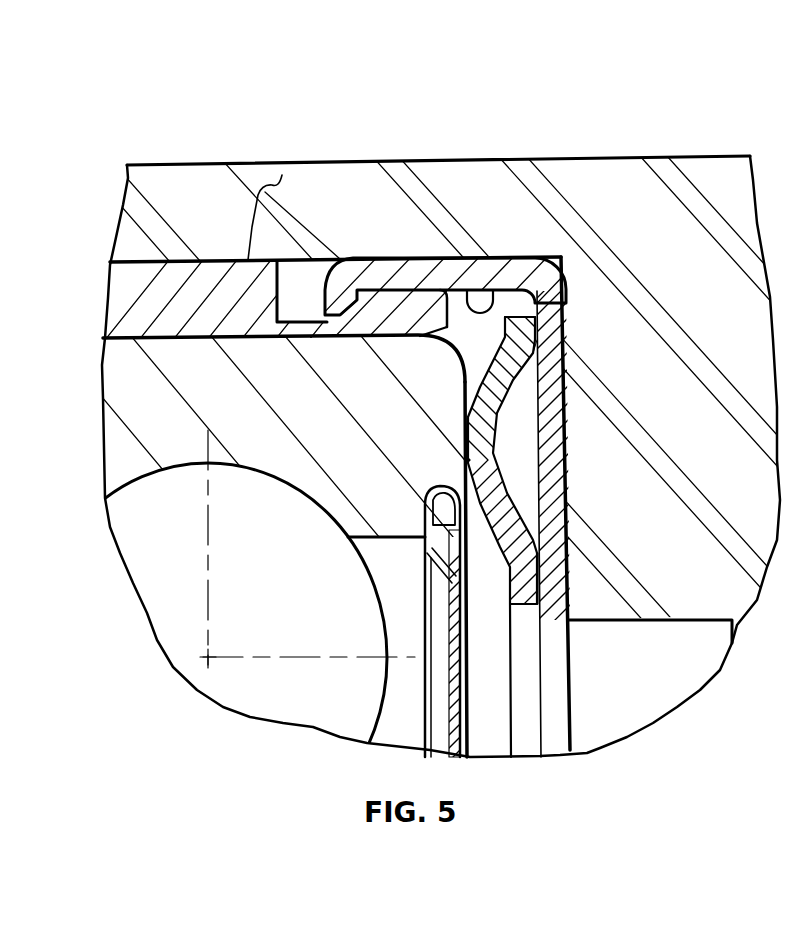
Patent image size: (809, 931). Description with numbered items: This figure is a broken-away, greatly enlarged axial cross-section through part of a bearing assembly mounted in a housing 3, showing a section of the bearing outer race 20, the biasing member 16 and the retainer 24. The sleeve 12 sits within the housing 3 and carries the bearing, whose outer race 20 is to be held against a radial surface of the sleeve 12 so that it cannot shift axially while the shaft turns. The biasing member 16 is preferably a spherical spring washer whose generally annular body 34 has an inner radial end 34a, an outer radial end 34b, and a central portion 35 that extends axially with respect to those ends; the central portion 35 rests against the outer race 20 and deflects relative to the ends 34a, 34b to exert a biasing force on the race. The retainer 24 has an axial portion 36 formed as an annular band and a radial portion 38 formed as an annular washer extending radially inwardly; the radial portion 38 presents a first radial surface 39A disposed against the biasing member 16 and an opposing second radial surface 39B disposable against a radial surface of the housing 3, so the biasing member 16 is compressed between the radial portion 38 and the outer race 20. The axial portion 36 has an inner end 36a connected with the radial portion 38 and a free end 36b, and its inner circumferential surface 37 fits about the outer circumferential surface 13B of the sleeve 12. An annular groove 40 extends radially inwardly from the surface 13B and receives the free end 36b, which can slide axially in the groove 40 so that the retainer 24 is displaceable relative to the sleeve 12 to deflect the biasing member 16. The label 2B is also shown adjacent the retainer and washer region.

The housing 3 is at (662, 140).
The sleeve 12 is at (151, 246).
The outer circumferential surface 13B is at (282, 175).
The biasing member 16 is at (423, 409).
The outer race 20 is at (214, 322).
The retainer 24 is at (479, 212).
The gap 2B is at (531, 410).
The annular body 34 is at (511, 435).
The inner radial end 34a is at (540, 600).
The outer radial end 34b is at (530, 323).
The central portion 35 is at (490, 463).
The axial portion 36 is at (428, 244).
The inner end 36a is at (420, 326).
The free end 36b is at (347, 270).
The inner circumferential surface 37 is at (483, 300).
The radial portion 38 is at (585, 373).
The first radial surface 39A is at (545, 490).
The second radial surface 39B is at (540, 530).
The annular groove 40 is at (297, 315).